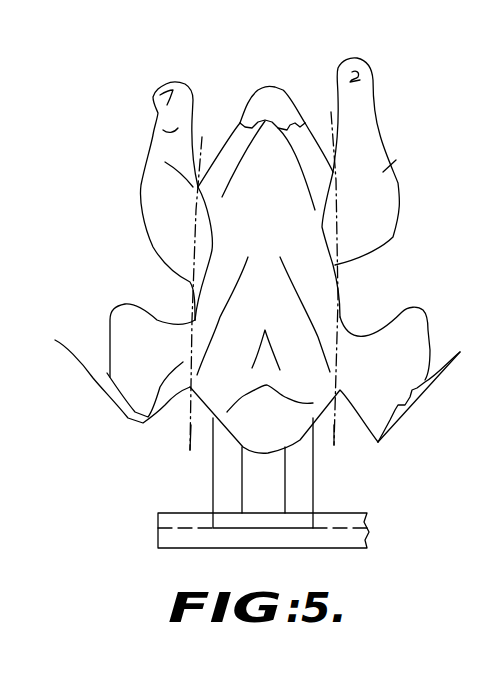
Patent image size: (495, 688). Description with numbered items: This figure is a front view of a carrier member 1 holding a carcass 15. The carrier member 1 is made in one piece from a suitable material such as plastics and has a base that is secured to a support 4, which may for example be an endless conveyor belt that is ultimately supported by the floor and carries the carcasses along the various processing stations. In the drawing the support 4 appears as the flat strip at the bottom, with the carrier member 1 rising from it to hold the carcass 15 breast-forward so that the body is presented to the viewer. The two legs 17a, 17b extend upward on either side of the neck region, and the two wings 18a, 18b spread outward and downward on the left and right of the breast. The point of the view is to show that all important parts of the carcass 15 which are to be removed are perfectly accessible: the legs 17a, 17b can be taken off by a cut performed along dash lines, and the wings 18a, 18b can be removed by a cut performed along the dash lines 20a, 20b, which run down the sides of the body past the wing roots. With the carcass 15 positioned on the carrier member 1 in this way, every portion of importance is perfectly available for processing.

The carrier member 1 is at (327, 488).
The support 4 is at (347, 540).
The carcass 15 is at (398, 262).
The leg 17a is at (145, 191).
The leg 17b is at (385, 173).
The wing 18a is at (203, 137).
The wing 18b is at (330, 118).
The dash line 20a is at (187, 436).
The dash line 20b is at (333, 433).